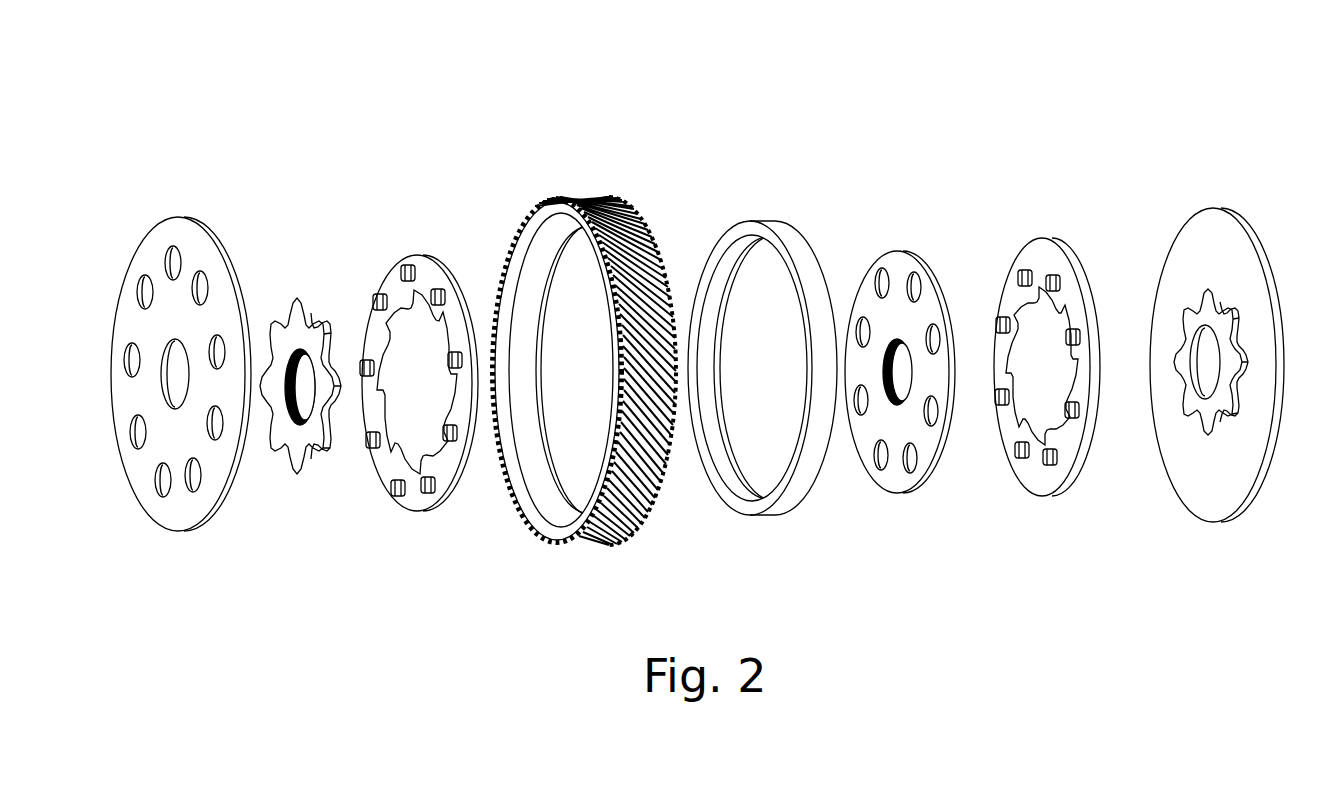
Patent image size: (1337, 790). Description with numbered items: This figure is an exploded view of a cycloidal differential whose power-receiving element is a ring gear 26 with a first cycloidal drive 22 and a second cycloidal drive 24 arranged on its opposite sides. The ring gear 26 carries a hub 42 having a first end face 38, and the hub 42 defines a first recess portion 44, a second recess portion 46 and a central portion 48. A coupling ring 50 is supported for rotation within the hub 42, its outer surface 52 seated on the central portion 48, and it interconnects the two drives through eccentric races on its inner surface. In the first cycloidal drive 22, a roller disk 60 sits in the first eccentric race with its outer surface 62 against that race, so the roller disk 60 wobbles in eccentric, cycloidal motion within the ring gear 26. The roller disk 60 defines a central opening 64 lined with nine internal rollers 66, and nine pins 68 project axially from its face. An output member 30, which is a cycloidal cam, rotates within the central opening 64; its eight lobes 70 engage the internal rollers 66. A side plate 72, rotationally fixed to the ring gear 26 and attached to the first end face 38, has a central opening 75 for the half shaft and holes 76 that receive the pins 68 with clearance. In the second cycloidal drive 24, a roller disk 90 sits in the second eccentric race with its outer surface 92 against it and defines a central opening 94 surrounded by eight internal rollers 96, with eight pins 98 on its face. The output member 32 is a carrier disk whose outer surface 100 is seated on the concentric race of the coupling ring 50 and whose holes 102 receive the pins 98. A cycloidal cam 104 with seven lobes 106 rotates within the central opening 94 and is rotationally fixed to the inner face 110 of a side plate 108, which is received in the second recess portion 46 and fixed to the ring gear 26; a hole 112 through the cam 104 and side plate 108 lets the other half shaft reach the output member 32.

The first cycloidal drive 22 is at (356, 150).
The second cycloidal drive 24 is at (1050, 120).
The ring gear 26 is at (592, 197).
The output member 30 is at (299, 283).
The output member 32 is at (906, 243).
The first end face 38 is at (548, 545).
The hub 42 is at (530, 318).
The first recess portion 44 is at (520, 486).
The second recess portion 46 is at (540, 380).
The central portion 48 is at (540, 435).
The coupling ring 50 is at (790, 497).
The outer surface 52 is at (777, 232).
The roller disk 60 is at (412, 262).
The outer surface 62 is at (435, 254).
The central opening 64 is at (417, 433).
The internal rollers 66 is at (392, 300).
The pins 68 is at (430, 484).
The lobes 70 is at (312, 470).
The side plate 72 is at (150, 255).
The central opening 75 is at (165, 385).
The holes 76 is at (140, 297).
The roller disk 90 is at (1064, 234).
The outer surface 92 is at (1088, 477).
The central opening 94 is at (1041, 420).
The internal rollers 96 is at (1012, 322).
The pins 98 is at (1014, 452).
The outer surface 100 is at (923, 262).
The holes 102 is at (902, 473).
The cycloidal cam 104 is at (1190, 420).
The lobes 106 is at (1240, 422).
The side plate 108 is at (1205, 225).
The inner face 110 is at (1207, 494).
The hole 112 is at (1197, 378).